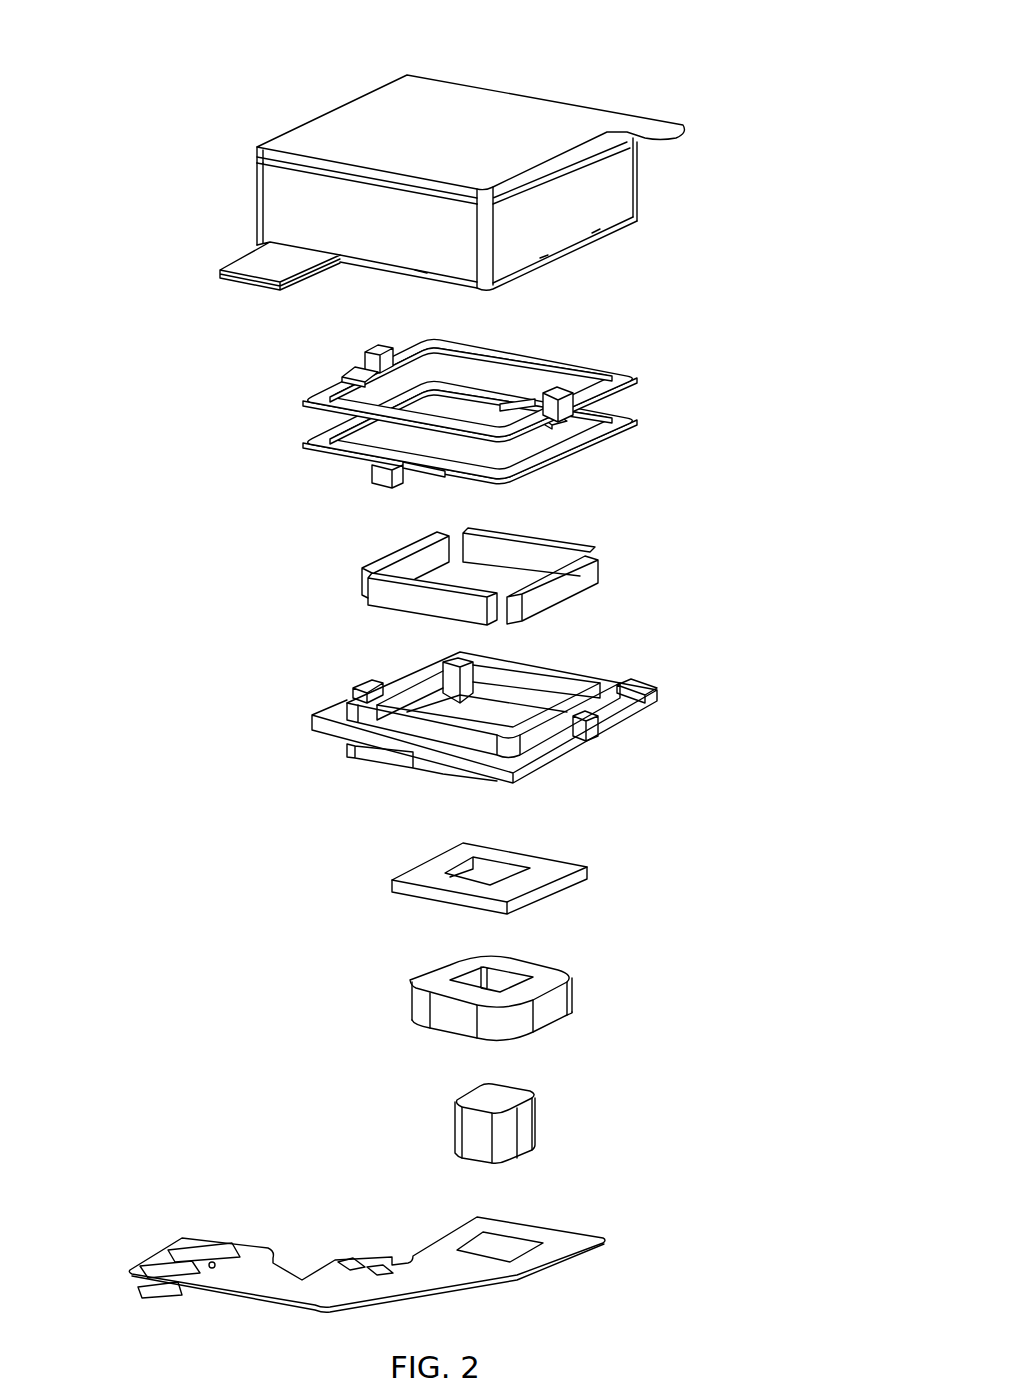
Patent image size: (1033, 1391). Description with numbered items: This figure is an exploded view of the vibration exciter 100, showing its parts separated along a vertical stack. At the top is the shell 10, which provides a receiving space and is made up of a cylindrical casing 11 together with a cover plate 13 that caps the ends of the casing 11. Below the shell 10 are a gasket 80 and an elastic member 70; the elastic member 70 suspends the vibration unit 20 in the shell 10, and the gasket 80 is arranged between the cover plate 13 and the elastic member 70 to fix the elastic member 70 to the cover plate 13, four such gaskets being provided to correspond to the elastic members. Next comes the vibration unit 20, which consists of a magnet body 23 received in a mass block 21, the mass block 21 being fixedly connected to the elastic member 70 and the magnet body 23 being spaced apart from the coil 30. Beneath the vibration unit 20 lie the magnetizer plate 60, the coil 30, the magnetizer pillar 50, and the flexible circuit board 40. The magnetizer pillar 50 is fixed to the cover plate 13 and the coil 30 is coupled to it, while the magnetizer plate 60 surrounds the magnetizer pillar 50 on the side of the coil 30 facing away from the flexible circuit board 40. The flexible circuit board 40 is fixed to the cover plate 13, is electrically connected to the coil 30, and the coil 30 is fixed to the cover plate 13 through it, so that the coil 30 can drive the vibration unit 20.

The vibration exciter 100 is at (481, 40).
The shell 10 is at (477, 182).
The casing 11 is at (607, 215).
The cover plate 13 is at (550, 145).
The gasket 80 is at (567, 390).
The elastic member 70 is at (583, 445).
The vibration unit 20 is at (543, 655).
The magnet body 23 is at (585, 582).
The mass block 21 is at (612, 694).
The magnetizer plate 60 is at (570, 864).
The coil 30 is at (558, 977).
The magnetizer pillar 50 is at (520, 1098).
The flexible circuit board 40 is at (570, 1243).